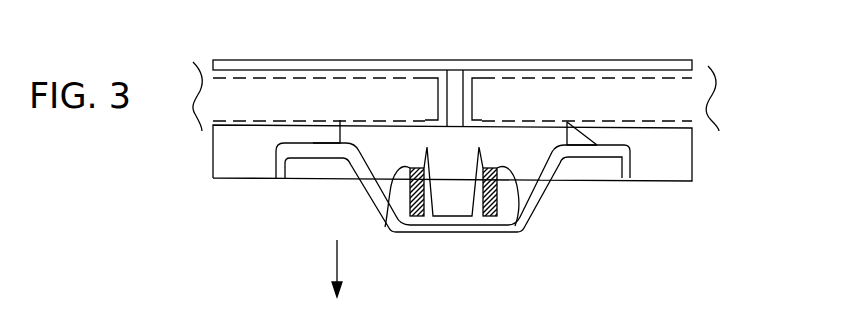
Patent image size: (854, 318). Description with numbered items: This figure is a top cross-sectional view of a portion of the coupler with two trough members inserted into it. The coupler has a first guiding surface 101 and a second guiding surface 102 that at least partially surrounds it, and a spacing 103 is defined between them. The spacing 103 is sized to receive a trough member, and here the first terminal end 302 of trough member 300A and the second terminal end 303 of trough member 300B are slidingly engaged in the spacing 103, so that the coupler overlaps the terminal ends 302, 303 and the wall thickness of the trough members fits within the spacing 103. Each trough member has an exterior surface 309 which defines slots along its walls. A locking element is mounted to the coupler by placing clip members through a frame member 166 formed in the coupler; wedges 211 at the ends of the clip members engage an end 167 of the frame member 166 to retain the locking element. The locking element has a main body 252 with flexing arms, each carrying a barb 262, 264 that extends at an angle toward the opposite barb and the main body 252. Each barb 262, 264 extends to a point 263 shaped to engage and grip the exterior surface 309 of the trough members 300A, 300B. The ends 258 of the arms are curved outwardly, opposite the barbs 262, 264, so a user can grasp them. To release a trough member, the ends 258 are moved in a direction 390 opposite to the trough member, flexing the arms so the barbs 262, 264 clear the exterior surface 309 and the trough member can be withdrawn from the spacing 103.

The trough member 300A is at (210, 78).
The trough member 300B is at (693, 91).
The first guiding surface 101 is at (315, 60).
The second guiding surface 102 is at (337, 168).
The spacing 103 is at (446, 60).
The first terminal end 302 is at (438, 105).
The second terminal end 303 is at (472, 88).
The barb 262 is at (326, 135).
The point 263 is at (567, 122).
The barb 264 is at (580, 138).
The wedge 211 is at (421, 162).
The exterior surface 309 is at (249, 127).
The end 258 is at (280, 178).
The direction 390 is at (340, 255).
The end 167 is at (401, 168).
The frame member 166 is at (498, 198).
The main body 252 is at (450, 232).